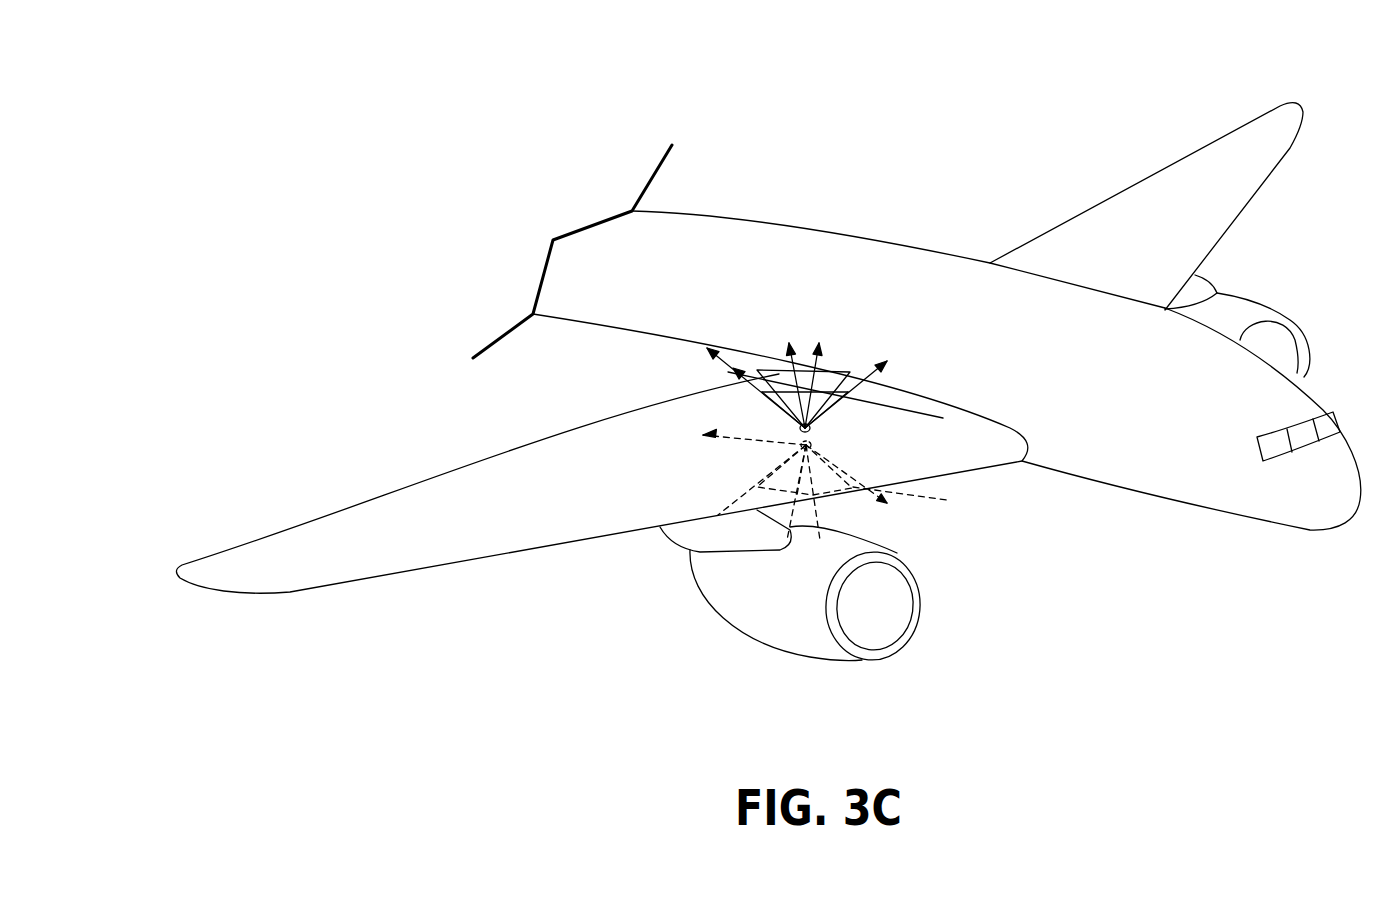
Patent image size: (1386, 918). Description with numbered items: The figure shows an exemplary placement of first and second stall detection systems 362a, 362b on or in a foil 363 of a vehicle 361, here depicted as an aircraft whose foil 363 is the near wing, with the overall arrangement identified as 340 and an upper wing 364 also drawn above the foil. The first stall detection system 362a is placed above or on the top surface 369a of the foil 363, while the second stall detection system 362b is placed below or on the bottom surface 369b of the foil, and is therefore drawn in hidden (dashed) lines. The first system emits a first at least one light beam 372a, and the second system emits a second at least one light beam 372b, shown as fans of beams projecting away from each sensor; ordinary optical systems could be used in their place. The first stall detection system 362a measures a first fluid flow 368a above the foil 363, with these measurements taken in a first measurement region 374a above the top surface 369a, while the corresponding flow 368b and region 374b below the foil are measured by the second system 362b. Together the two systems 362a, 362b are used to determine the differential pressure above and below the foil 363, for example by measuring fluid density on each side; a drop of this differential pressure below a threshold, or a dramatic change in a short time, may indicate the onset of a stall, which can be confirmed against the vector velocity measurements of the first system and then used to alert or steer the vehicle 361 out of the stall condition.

The aircraft 340 is at (889, 117).
The vehicle 361 is at (1160, 457).
The foil 363 is at (350, 580).
The upper wing 364 is at (703, 240).
The first stall detection system 362a is at (800, 428).
The second stall detection system 362b is at (797, 443).
The first fluid flow 368a is at (908, 408).
The lower surface region of wing 368b is at (860, 477).
The top surface 369a is at (260, 560).
The bottom surface 369b is at (550, 543).
The first at least one light beam 372a is at (847, 397).
The second at least one light beam 372b is at (743, 497).
The first measurement region 374a is at (760, 368).
The scan directions of second sensor 374b is at (830, 493).